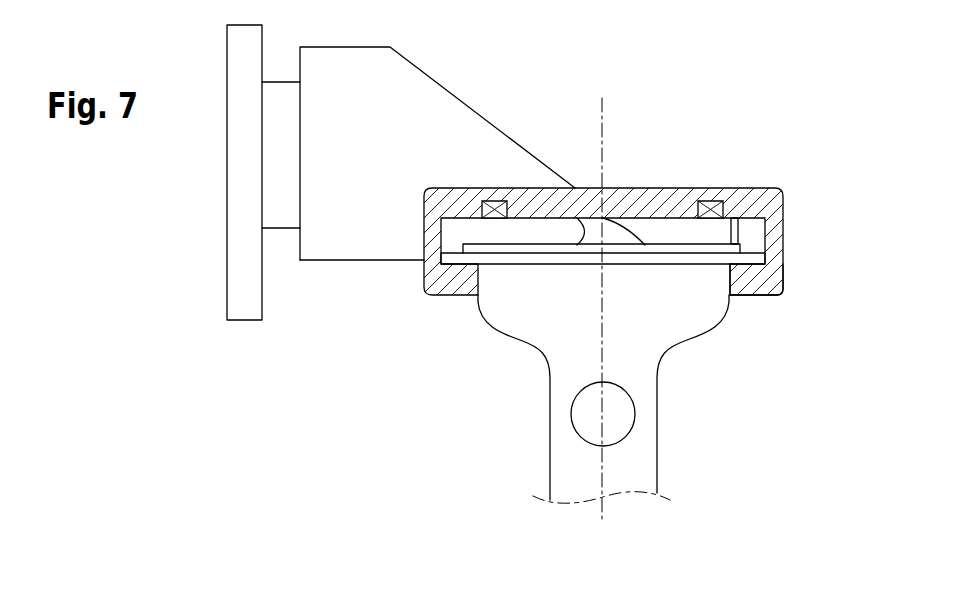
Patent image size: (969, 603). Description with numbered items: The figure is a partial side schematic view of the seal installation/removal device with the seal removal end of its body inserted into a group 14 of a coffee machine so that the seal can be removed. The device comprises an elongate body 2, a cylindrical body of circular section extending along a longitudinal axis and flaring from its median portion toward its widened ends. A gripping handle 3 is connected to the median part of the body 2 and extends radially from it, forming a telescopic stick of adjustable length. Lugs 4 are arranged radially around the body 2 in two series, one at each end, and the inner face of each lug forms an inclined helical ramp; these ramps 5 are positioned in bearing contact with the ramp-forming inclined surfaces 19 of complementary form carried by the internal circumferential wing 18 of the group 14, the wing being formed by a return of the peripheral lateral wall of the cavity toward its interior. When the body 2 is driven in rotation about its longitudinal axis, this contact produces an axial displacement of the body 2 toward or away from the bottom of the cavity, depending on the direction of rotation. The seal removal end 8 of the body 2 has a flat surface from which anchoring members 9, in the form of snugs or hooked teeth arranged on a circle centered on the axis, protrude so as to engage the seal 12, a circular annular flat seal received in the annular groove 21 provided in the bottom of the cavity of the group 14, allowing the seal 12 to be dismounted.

The elongate body 2 is at (635, 462).
The gripping handle 3 is at (617, 403).
The lugs 4 is at (783, 212).
The ramps 5 is at (748, 275).
The seal removal end 8 is at (532, 250).
The anchoring members 9 is at (616, 236).
The seal 12 is at (487, 200).
The group 14 is at (362, 217).
The internal circumferential wing 18 is at (760, 280).
The inclined surfaces 19 is at (753, 255).
The annular groove 21 is at (717, 200).